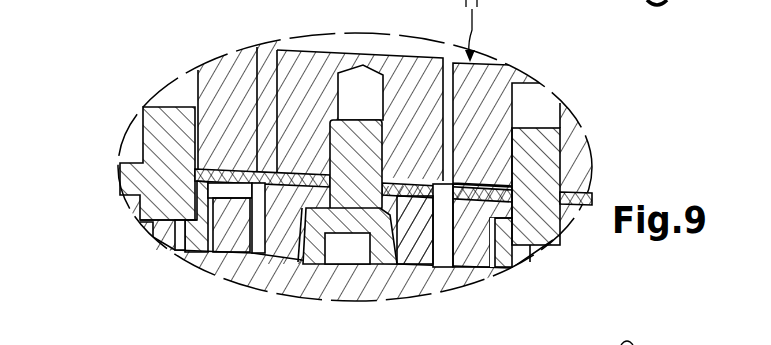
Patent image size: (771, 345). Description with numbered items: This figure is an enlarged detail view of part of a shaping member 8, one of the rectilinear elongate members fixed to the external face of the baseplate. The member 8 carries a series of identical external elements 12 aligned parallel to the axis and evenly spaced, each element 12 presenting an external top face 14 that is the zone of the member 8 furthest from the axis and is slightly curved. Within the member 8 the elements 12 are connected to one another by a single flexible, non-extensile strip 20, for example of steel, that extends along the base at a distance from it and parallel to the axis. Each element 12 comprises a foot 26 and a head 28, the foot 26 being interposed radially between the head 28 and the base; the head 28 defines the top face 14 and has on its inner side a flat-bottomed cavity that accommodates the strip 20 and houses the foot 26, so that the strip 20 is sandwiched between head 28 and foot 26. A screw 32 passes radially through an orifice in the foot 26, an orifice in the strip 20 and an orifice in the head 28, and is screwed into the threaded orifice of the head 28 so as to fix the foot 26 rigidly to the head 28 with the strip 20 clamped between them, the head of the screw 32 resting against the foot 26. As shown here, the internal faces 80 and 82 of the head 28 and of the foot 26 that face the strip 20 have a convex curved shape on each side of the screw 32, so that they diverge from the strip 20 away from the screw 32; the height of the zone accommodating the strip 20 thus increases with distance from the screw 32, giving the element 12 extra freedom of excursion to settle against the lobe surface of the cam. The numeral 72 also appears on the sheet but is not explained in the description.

The shaping member 8 is at (571, 78).
The external element 12 is at (212, 83).
The top face 14 is at (318, 44).
The strip 20 is at (264, 174).
The foot 26 is at (230, 230).
The head 28 is at (418, 130).
The screw 32 is at (346, 248).
The connecting element 72 is at (712, 344).
The internal face of the head 80 is at (283, 196).
The internal face of the foot 82 is at (306, 162).